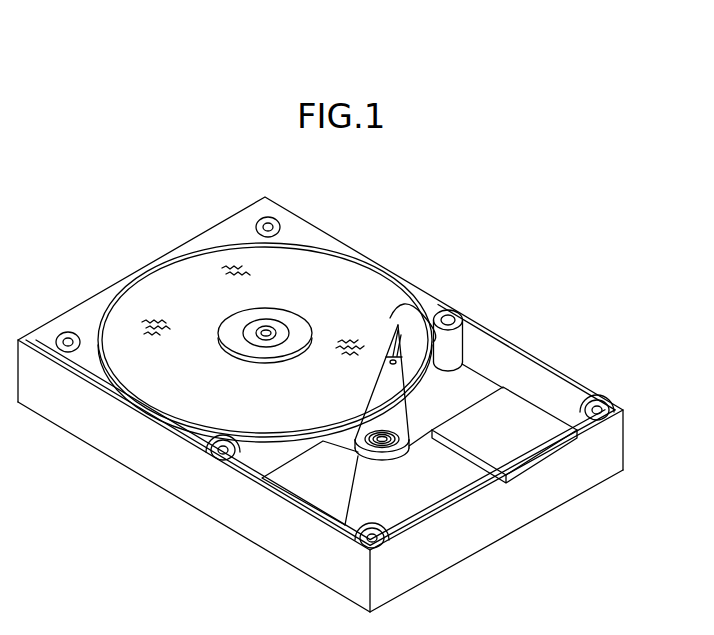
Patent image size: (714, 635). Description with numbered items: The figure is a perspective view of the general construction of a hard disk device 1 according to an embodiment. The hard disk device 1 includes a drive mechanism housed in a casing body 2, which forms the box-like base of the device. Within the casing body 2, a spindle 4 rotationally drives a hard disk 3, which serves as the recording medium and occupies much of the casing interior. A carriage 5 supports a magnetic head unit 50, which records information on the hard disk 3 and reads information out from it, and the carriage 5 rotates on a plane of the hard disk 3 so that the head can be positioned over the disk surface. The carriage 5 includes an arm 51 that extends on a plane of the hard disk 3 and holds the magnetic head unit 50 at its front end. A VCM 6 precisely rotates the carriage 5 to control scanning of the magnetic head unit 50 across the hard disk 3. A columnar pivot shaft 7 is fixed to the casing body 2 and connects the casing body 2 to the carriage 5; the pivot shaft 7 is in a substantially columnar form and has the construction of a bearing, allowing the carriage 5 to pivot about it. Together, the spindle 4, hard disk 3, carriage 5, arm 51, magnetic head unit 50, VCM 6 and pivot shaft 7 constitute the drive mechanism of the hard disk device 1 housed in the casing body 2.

The hard disk device 1 is at (530, 226).
The casing body 2 is at (163, 470).
The hard disk 3 is at (358, 282).
The spindle 4 is at (250, 326).
The carriage 5 is at (430, 390).
The VCM 6 is at (312, 494).
The pivot shaft 7 is at (353, 452).
The magnetic head unit 50 is at (397, 312).
The arm 51 is at (450, 310).